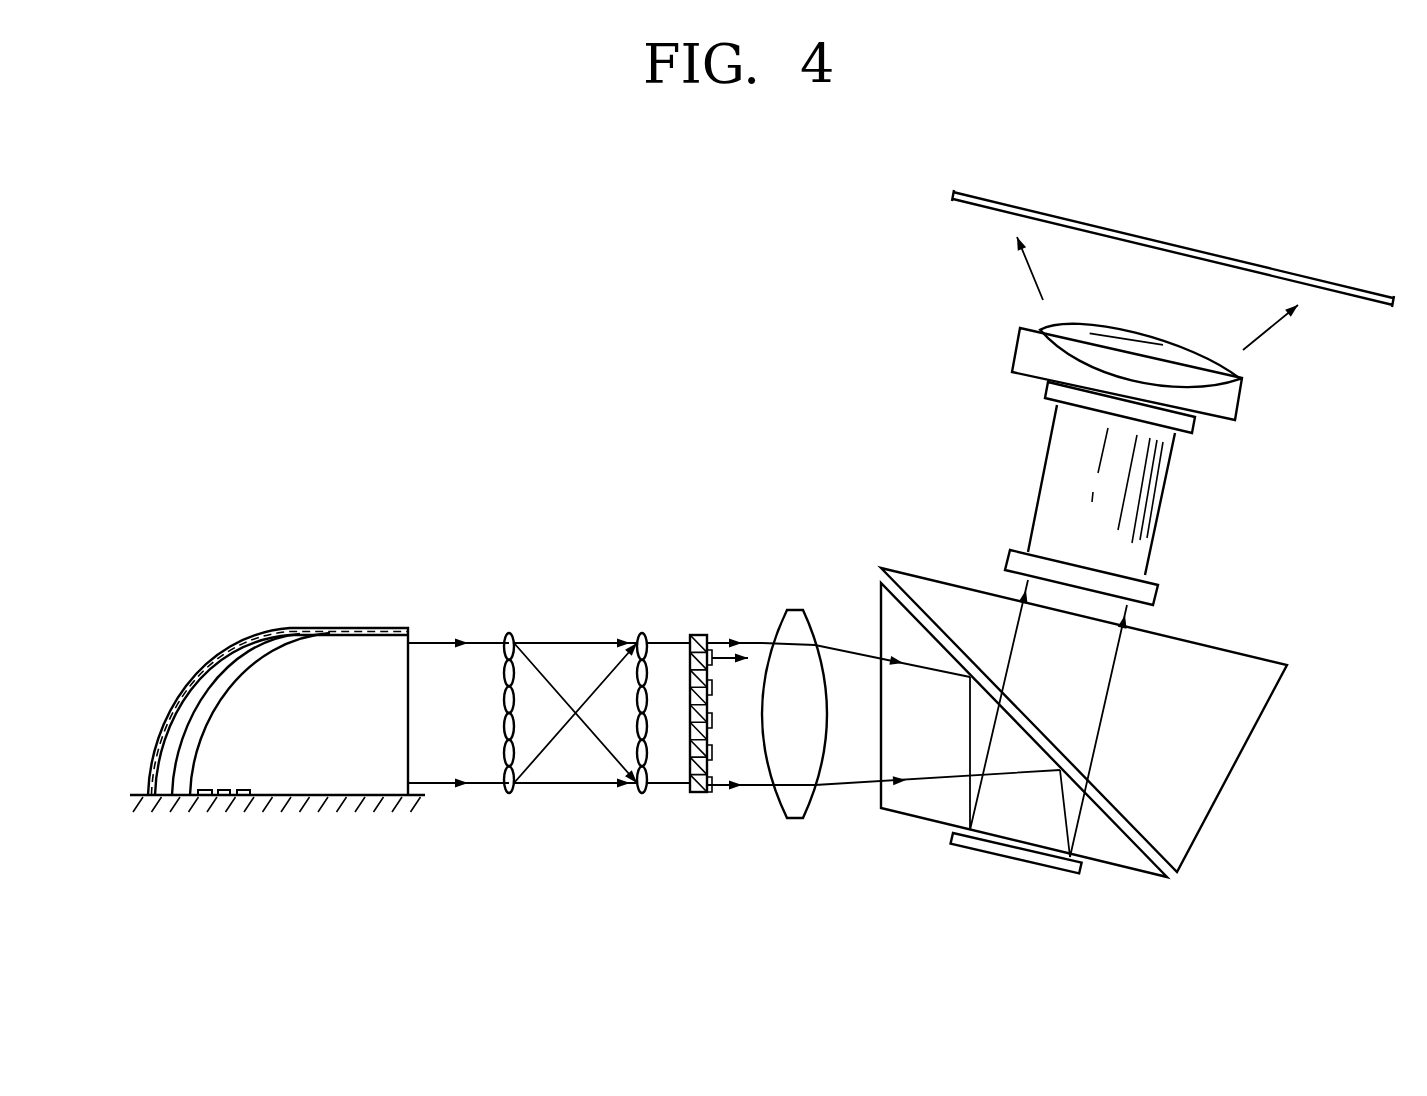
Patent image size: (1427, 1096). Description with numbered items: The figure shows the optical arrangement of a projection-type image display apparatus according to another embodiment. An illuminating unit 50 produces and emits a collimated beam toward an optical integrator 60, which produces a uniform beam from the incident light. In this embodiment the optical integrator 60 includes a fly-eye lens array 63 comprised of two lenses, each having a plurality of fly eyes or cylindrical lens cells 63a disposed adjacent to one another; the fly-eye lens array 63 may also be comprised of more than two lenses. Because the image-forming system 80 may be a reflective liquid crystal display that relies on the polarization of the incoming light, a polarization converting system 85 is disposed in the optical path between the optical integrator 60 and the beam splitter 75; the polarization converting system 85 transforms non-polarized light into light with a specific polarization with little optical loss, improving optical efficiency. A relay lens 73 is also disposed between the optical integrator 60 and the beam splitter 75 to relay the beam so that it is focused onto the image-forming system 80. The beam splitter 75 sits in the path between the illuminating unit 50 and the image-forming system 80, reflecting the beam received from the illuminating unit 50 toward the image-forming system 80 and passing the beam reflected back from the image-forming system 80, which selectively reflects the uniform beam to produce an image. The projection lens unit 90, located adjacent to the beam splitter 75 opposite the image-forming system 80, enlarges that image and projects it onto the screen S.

The illuminating unit 50 is at (290, 600).
The optical integrator 60 is at (656, 600).
The fly-eye lens array 63 is at (642, 620).
The cylindrical lens cells 63a is at (507, 628).
The polarization converting system (PCS) 85 is at (698, 793).
The relay lens 73 is at (796, 608).
The beam splitter 75 is at (1284, 722).
The image-forming system 80 is at (1028, 866).
The projection lens unit 90 is at (1265, 422).
The screen S is at (1345, 284).